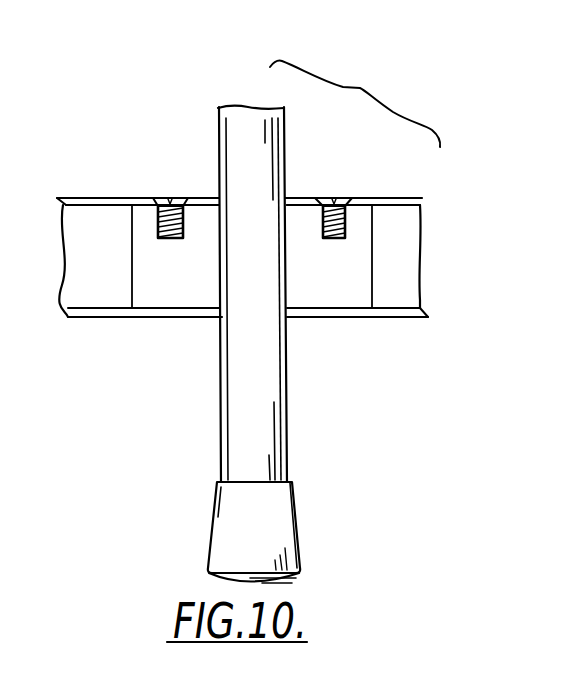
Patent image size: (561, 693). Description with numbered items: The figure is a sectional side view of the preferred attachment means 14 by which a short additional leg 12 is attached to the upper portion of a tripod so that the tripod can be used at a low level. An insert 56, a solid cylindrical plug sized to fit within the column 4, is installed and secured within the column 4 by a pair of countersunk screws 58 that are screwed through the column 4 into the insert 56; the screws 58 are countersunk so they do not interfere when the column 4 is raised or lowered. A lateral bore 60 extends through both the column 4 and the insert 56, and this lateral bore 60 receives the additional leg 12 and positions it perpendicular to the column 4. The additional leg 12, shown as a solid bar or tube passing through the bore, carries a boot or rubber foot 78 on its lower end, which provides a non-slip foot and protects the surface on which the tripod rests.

The column 4 is at (97, 217).
The additional leg 12 is at (240, 128).
The attachment means 14 is at (355, 93).
The insert 56 is at (195, 297).
The countersunk screws 58 is at (168, 198).
The lateral bore 60 is at (287, 197).
The rubber foot 78 is at (235, 529).